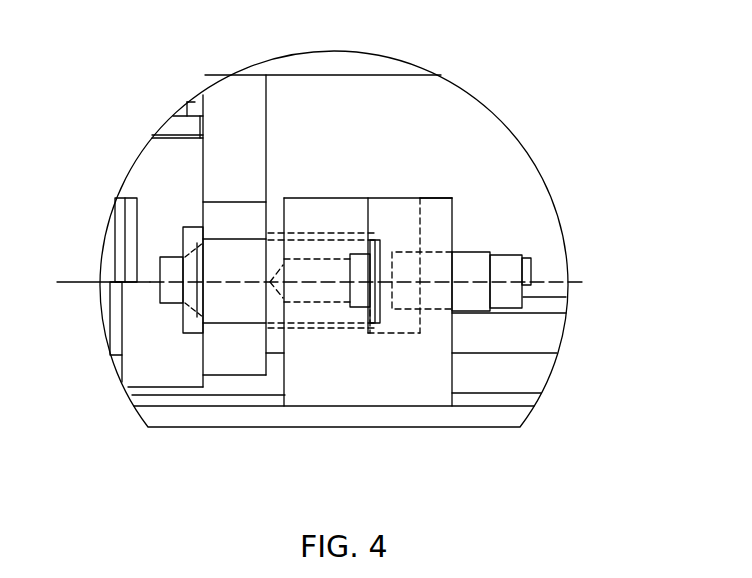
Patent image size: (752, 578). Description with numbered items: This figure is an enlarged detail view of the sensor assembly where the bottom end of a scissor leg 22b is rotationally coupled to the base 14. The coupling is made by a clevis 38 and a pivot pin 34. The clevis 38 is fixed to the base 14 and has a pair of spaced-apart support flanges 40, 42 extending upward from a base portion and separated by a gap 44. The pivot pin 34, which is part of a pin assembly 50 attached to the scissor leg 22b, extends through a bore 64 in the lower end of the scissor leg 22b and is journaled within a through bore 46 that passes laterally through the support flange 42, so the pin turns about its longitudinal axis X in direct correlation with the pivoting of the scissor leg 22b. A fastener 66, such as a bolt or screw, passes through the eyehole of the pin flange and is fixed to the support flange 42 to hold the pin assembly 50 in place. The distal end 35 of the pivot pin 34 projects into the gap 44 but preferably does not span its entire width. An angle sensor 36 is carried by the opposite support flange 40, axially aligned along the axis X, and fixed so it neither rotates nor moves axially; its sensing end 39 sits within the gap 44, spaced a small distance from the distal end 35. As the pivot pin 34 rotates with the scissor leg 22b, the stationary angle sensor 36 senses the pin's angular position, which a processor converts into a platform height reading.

The base 14 is at (513, 420).
The scissor leg 22b is at (205, 93).
The pivot pin 34 is at (237, 308).
The distal end 35 is at (380, 320).
The angle sensor 36 is at (486, 244).
The clevis 38 is at (321, 183).
The sensing end 39 is at (402, 310).
The support flange 40 is at (437, 198).
The support flange 42 is at (348, 198).
The gap 44 is at (393, 198).
The through bore 46 is at (312, 327).
The pin assembly 50 is at (169, 334).
The bore 64 is at (248, 323).
The fastener 66 is at (165, 257).
The longitudinal axis X is at (62, 284).